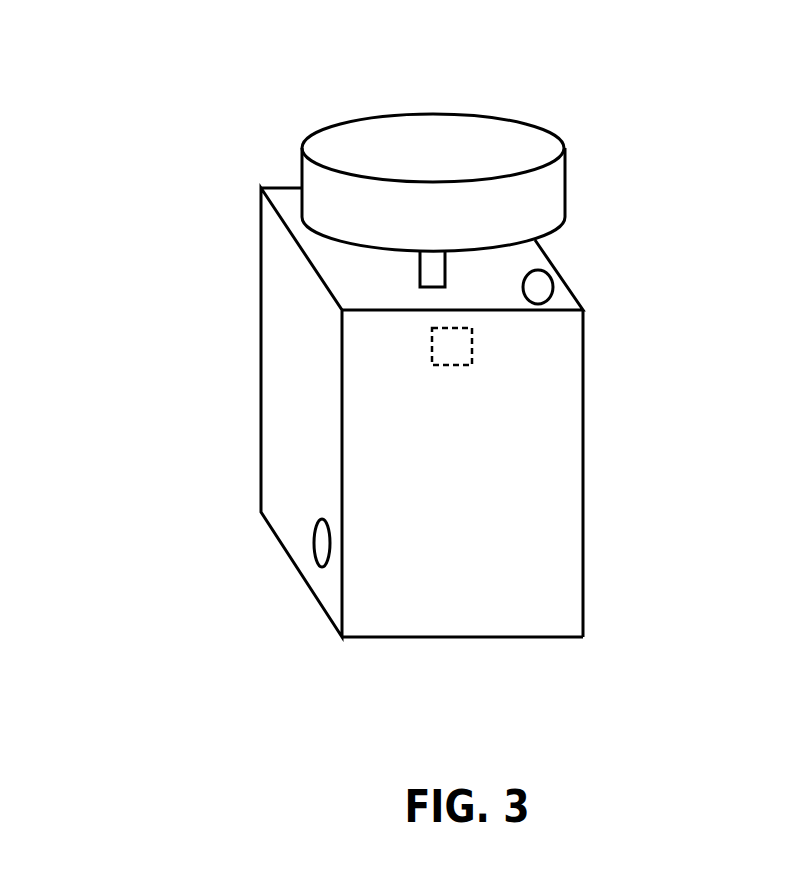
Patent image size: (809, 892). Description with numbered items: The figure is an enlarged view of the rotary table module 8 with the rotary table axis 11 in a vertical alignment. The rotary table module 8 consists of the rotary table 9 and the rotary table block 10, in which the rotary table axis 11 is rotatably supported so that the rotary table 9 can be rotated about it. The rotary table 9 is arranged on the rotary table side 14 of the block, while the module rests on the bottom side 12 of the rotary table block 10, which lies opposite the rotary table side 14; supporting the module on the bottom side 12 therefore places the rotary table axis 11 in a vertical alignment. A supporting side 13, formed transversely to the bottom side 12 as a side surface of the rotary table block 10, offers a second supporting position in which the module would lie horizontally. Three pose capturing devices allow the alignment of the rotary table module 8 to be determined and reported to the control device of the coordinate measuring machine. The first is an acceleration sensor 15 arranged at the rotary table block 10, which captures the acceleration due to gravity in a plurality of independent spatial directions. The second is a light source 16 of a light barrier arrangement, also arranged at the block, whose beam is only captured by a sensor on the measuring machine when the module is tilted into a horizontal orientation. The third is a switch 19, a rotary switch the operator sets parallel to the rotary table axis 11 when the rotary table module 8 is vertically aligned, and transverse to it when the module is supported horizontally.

The rotary table module 8 is at (627, 150).
The rotary table 9 is at (422, 145).
The rotary table block 10 is at (420, 469).
The rotary table axis 11 is at (442, 273).
The bottom side 12 is at (395, 640).
The supporting side 13 is at (587, 555).
The rotary table side 14 is at (503, 268).
The acceleration sensor 15 is at (452, 343).
The light source 16 is at (538, 283).
The switch 19 is at (315, 552).